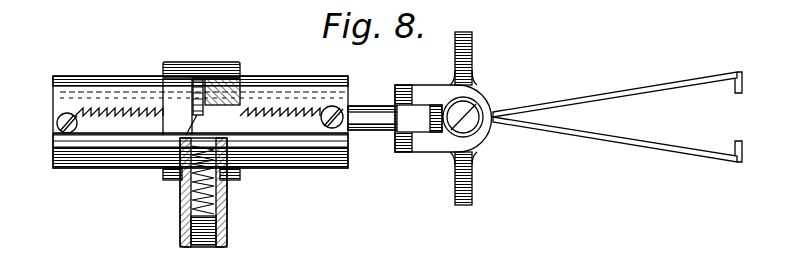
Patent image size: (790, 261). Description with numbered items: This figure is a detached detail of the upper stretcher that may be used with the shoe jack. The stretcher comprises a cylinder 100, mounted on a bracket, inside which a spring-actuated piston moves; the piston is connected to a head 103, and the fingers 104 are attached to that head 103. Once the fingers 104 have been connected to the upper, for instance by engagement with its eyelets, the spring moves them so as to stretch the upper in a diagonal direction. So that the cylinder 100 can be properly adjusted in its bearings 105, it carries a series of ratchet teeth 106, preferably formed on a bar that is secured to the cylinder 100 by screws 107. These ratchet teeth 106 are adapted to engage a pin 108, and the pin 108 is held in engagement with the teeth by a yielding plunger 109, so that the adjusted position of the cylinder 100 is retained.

The cylinder 100 is at (125, 79).
The head 103 is at (440, 143).
The fingers 104 is at (688, 148).
The bearings 105 is at (226, 63).
The ratchet teeth 106 is at (273, 118).
The screws 107 is at (58, 122).
The pin 108 is at (200, 79).
The yielding plunger 109 is at (184, 150).